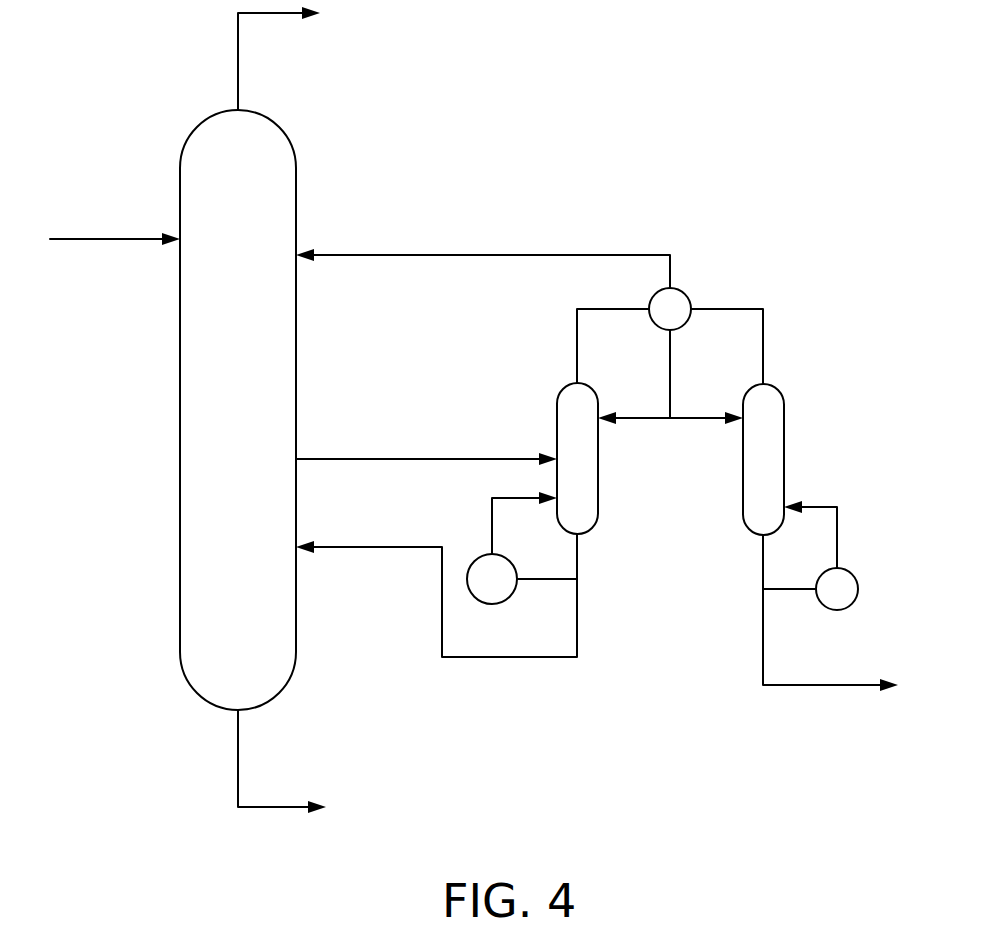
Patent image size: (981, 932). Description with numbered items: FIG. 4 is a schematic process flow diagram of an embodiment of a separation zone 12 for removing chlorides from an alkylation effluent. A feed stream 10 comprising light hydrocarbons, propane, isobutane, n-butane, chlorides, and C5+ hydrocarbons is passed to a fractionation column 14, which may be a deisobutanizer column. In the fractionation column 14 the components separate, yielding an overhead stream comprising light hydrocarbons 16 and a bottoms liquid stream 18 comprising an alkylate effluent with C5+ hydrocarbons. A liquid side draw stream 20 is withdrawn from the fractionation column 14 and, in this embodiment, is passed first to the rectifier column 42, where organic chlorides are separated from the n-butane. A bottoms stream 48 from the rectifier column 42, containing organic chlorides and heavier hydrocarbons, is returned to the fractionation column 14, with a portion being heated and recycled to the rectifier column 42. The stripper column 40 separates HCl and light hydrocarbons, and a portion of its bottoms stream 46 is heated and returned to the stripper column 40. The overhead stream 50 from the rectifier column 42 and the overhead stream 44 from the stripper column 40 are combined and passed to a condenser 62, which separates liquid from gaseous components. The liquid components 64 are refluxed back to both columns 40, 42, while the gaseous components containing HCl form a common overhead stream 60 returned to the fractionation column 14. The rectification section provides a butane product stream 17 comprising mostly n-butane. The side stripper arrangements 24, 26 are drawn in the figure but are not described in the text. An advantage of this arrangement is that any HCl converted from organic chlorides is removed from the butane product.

The feed stream 10 is at (117, 238).
The separation zone 12 is at (595, 68).
The fractionation column 14 is at (287, 132).
The stream comprising light hydrocarbons 16 is at (238, 44).
The butane product stream 17 is at (851, 684).
The liquid stream 18 is at (238, 758).
The liquid side draw stream 20 is at (346, 458).
The first side stripper 24 is at (540, 420).
The second side stripper 26 is at (798, 456).
The stripper column 40 is at (780, 385).
The rectifier column 42 is at (558, 384).
The overhead stream 44 is at (746, 308).
The bottoms stream 46 is at (763, 575).
The bottoms stream 48 is at (578, 615).
The overhead stream 50 is at (602, 309).
The common overhead stream 60 is at (532, 254).
The condenser 62 is at (690, 295).
The liquid components 64 is at (670, 357).